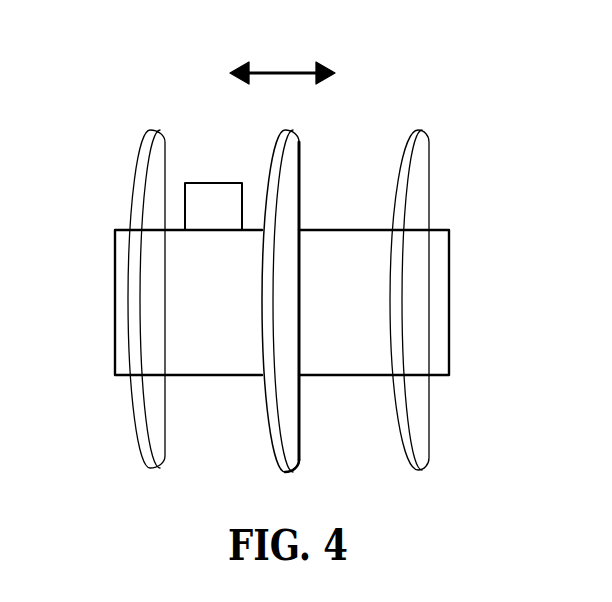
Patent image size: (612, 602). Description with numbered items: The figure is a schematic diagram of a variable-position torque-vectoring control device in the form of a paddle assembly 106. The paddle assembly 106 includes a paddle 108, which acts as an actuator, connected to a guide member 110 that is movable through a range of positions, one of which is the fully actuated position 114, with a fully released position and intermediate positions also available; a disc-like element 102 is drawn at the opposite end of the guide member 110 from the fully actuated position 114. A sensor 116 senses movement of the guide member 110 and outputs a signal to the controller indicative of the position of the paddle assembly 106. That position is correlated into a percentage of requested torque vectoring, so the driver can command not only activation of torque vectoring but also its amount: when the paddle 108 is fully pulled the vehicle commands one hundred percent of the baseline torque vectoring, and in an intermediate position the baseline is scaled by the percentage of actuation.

The first disc 102 is at (137, 151).
The paddle assembly 106 is at (370, 91).
The paddle 108 is at (270, 155).
The guide member 110 is at (290, 259).
The fully actuated position 114 is at (430, 152).
The sensor 116 is at (230, 217).